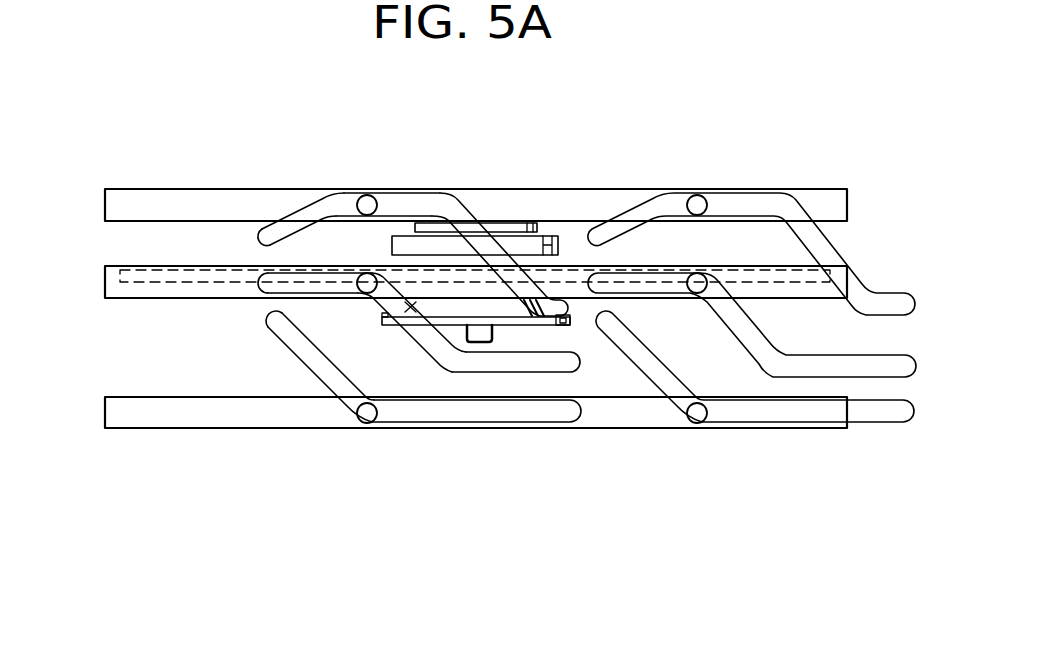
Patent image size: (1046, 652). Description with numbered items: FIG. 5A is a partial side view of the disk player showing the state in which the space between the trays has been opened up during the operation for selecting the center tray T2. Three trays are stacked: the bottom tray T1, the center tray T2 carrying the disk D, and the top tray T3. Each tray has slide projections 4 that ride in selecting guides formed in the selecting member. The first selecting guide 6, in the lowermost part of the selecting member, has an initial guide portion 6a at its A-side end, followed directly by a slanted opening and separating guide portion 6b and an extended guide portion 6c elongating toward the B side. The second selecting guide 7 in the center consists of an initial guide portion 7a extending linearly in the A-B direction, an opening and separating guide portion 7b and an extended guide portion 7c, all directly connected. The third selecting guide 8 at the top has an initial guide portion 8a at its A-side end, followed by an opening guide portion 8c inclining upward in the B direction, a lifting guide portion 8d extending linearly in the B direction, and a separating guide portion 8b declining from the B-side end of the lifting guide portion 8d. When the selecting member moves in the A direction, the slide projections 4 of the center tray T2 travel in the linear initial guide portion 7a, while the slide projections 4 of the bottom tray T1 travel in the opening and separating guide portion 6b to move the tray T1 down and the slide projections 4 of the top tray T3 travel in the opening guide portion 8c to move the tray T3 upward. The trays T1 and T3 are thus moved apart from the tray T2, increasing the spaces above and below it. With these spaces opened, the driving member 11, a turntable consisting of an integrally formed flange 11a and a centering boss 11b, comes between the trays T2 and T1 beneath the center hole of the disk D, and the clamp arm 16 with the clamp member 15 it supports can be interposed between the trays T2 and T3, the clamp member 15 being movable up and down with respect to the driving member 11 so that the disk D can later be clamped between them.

The slide projection 4 is at (366, 425).
The first selecting guide 6 is at (552, 407).
The initial guide portion 6a is at (268, 328).
The opening and separating guide portion 6b is at (303, 372).
The extended guide portion 6c is at (485, 410).
The second selecting guide 7 is at (561, 394).
The initial guide portion 7a is at (262, 297).
The opening and separating guide portion 7b is at (420, 345).
The extended guide portion 7c is at (530, 368).
The third selecting guide 8 is at (583, 203).
The initial guide portion 8a is at (258, 212).
The separating guide portion 8b is at (524, 245).
The opening guide portion 8c is at (300, 204).
The lifting guide portion 8d is at (404, 200).
The driving member 11 is at (486, 408).
The flange 11a is at (574, 330).
The boss 11b is at (386, 314).
The clamp member 15 is at (560, 245).
The clamp arm 16 is at (512, 222).
The disk D is at (121, 268).
The bottom tray T1 is at (107, 420).
The center tray T2 is at (107, 291).
The top tray T3 is at (107, 206).